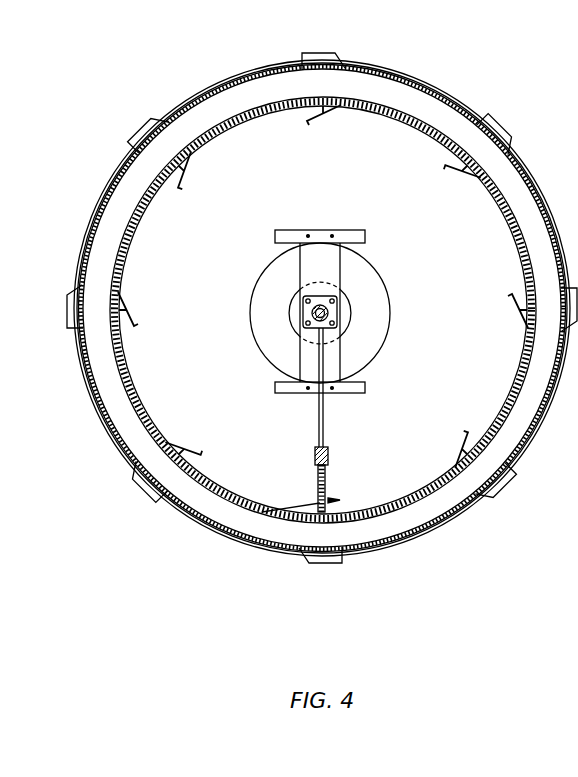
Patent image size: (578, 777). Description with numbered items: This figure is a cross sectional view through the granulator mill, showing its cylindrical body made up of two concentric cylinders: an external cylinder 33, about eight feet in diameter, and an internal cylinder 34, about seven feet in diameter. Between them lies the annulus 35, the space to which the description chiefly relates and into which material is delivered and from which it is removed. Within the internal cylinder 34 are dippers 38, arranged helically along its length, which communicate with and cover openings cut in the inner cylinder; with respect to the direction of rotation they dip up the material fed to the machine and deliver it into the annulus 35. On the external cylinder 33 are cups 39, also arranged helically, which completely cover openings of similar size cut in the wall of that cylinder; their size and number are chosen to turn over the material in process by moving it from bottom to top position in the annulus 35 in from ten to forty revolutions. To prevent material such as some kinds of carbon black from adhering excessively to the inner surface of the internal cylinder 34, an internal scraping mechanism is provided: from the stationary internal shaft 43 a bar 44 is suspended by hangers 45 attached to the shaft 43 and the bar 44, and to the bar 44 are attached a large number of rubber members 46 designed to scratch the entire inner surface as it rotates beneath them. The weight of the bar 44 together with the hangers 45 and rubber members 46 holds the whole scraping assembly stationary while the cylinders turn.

The external cylinder 33 is at (86, 226).
The internal cylinder 34 is at (387, 512).
The annulus 35 is at (227, 107).
The dippers 38 is at (325, 114).
The cups 39 is at (335, 53).
The stationary internal shaft 43 is at (336, 310).
The bar 44 is at (329, 454).
The hangers 45 is at (324, 423).
The rubber members 46 is at (326, 491).